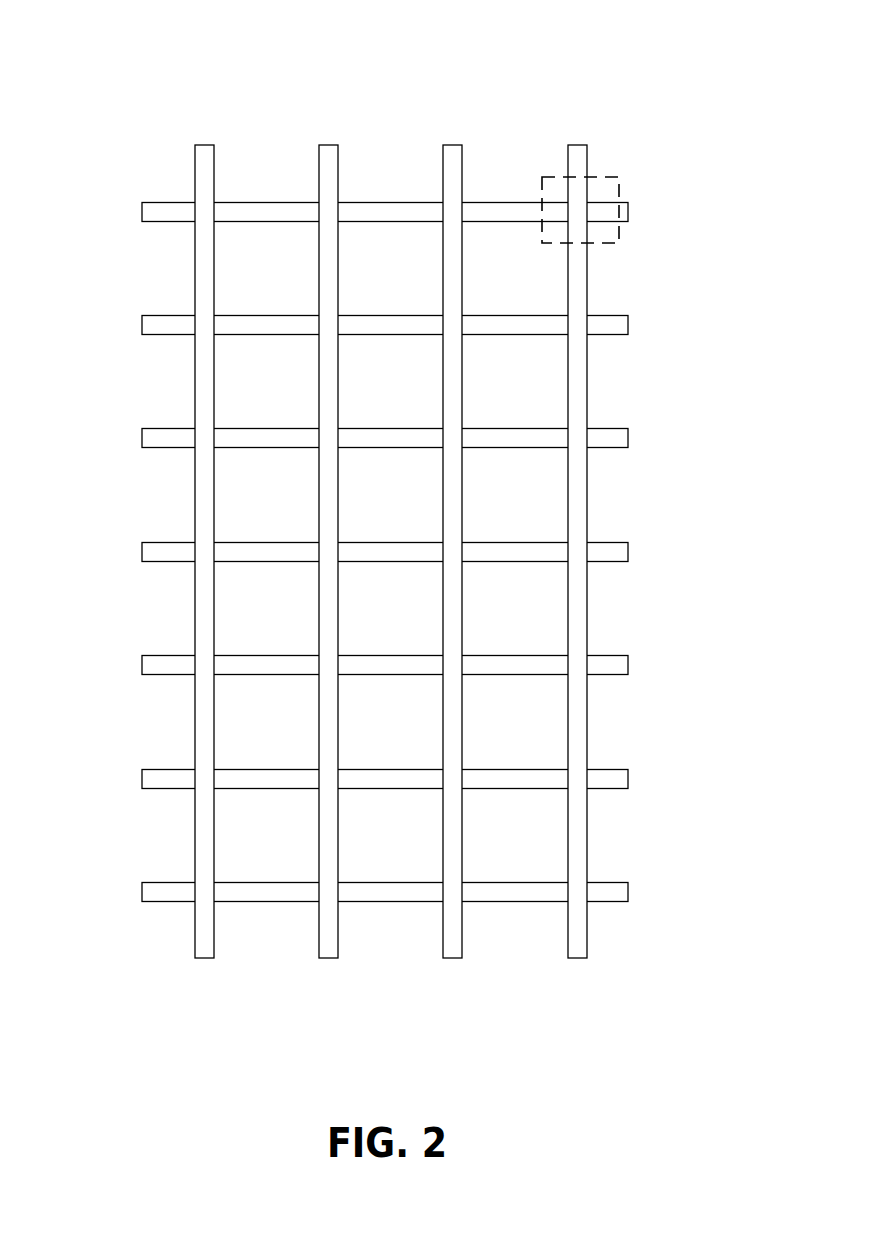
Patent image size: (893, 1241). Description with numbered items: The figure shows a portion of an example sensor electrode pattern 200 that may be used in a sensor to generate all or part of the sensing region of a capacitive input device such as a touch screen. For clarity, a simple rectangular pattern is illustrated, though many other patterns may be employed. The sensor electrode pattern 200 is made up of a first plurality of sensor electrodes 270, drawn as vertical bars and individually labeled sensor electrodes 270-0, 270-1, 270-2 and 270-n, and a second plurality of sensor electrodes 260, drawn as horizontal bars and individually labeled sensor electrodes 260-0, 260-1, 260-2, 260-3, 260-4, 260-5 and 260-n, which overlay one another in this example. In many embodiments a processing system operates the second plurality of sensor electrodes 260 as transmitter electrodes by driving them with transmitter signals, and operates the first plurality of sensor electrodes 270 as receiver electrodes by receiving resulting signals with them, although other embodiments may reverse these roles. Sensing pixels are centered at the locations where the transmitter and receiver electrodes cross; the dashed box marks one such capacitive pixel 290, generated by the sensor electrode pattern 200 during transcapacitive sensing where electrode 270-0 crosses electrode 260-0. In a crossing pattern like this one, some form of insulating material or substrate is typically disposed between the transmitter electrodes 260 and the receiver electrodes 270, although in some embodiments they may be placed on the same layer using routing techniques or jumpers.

The sensor electrode pattern 200 is at (128, 38).
The second plurality of sensor electrodes 260 is at (126, 168).
The sensor electrode 260-0 is at (623, 218).
The sensor electrode 260-1 is at (623, 331).
The sensor electrode 260-2 is at (623, 444).
The sensor electrode 260-3 is at (623, 558).
The sensor electrode 260-4 is at (623, 671).
The sensor electrode 260-5 is at (623, 785).
The sensor electrode 260-n is at (623, 898).
The first plurality of sensor electrodes 270 is at (593, 120).
The sensor electrode 270-0 is at (575, 937).
The sensor electrode 270-1 is at (450, 937).
The sensor electrode 270-2 is at (326, 937).
The sensor electrode 270-n is at (202, 937).
The capacitive pixel 290 is at (609, 177).